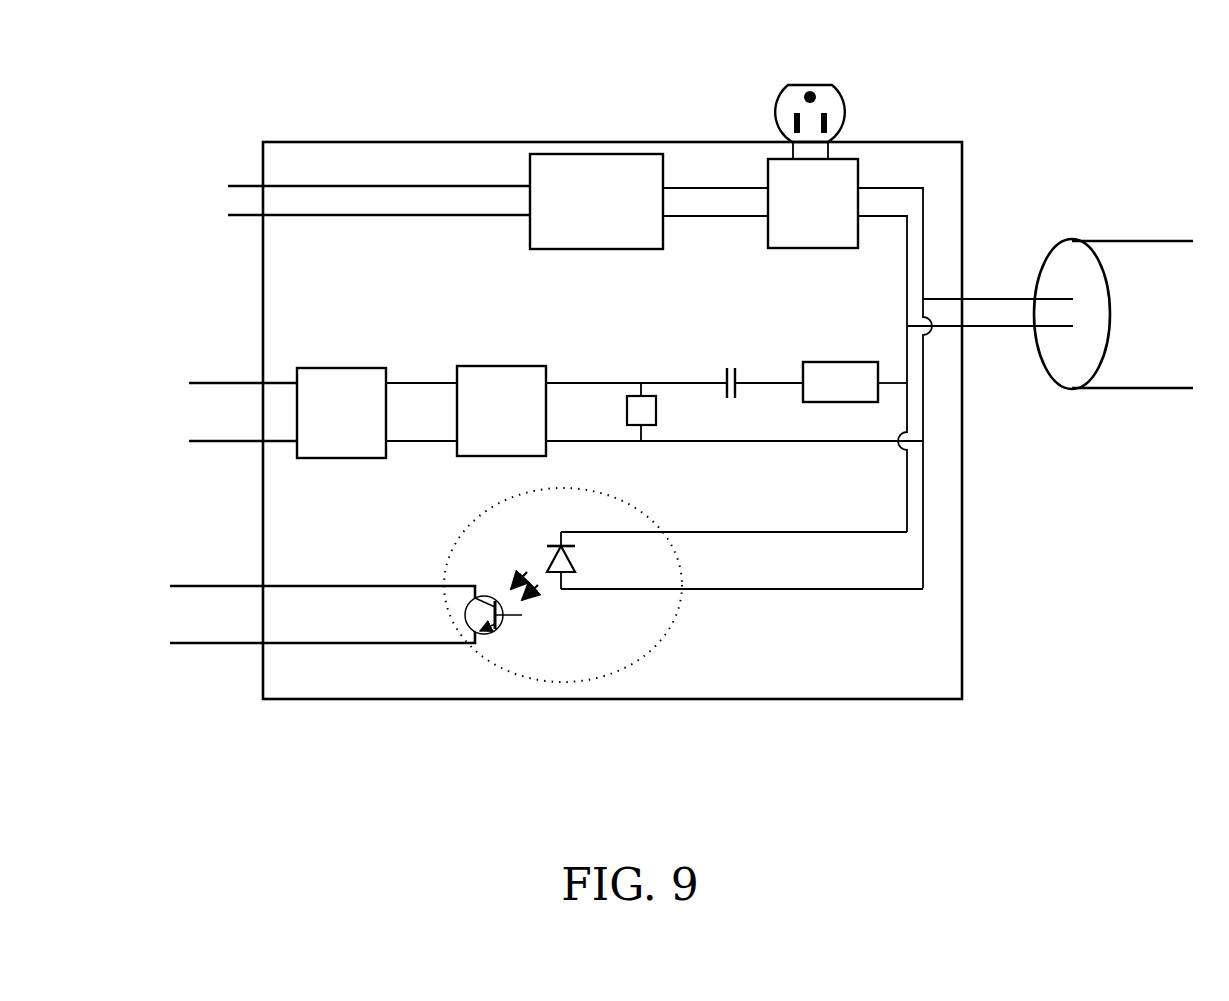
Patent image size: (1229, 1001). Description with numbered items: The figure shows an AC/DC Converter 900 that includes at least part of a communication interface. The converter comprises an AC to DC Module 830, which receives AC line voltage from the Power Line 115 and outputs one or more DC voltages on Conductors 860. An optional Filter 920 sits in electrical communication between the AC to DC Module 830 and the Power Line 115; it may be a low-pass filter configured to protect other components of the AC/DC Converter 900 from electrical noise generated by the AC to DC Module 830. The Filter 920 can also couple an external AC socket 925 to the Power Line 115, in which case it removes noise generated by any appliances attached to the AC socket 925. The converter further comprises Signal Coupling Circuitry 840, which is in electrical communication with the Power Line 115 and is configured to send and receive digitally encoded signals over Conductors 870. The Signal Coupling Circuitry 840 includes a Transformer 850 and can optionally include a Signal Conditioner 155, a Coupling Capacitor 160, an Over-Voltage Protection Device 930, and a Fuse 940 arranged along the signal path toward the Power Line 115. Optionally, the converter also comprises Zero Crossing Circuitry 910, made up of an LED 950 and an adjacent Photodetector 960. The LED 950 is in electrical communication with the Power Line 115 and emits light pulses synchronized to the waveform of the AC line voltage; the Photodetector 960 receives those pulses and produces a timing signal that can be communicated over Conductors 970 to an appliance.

The AC/DC converter 900 is at (275, 142).
The conductors 860 is at (375, 186).
The AC to DC module 830 is at (645, 154).
The filter 920 is at (852, 159).
The external AC socket 925 is at (826, 84).
The power line 115 is at (1100, 241).
The signal coupling circuitry 840 is at (303, 284).
The conductors 870 is at (225, 382).
The signal conditioner 155 is at (310, 368).
The transformer 850 is at (478, 366).
The over-voltage protection device 930 is at (656, 410).
The coupling capacitor 160 is at (730, 350).
The fuse 940 is at (855, 362).
The zero crossing circuitry 910 is at (470, 525).
The LED 950 is at (575, 560).
The photodetector 960 is at (500, 622).
The conductors 970 is at (223, 586).